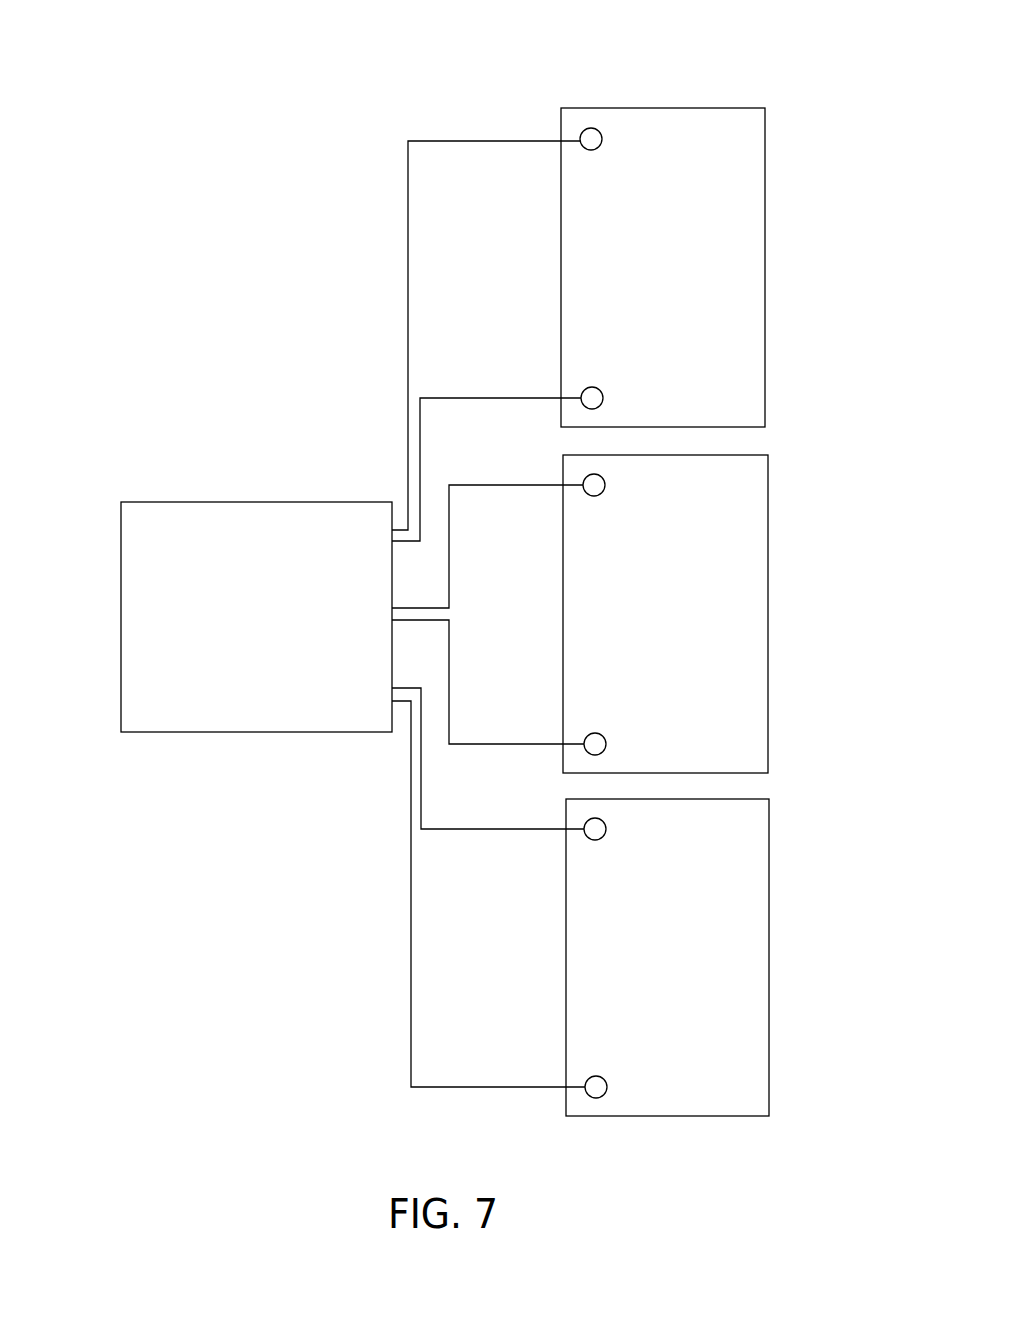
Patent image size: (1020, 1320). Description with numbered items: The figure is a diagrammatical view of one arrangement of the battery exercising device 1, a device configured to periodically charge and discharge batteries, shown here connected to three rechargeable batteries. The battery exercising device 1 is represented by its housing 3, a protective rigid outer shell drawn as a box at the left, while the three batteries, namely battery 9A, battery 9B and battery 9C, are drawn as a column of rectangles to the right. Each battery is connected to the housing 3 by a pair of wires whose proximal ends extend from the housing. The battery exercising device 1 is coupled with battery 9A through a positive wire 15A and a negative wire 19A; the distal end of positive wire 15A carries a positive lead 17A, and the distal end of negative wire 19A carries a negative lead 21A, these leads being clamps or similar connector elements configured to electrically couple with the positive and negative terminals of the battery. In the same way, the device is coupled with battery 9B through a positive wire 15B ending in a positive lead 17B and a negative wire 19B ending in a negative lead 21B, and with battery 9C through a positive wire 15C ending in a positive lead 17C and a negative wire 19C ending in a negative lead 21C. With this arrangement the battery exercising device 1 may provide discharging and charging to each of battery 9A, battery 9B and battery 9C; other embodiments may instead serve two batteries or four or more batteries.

The battery exercising device 1 is at (222, 296).
The housing 3 is at (157, 558).
The battery 9A is at (738, 232).
The battery 9B is at (706, 613).
The battery 9C is at (720, 1030).
The positive wire 15A is at (459, 133).
The positive wire 15B is at (508, 483).
The positive wire 15C is at (485, 832).
The positive lead 17A is at (592, 137).
The positive lead 17B is at (595, 483).
The positive lead 17C is at (598, 827).
The negative wire 19A is at (470, 394).
The negative wire 19B is at (447, 746).
The negative wire 19C is at (413, 1030).
The negative lead 21A is at (592, 398).
The negative lead 21B is at (597, 742).
The negative lead 21C is at (598, 1090).